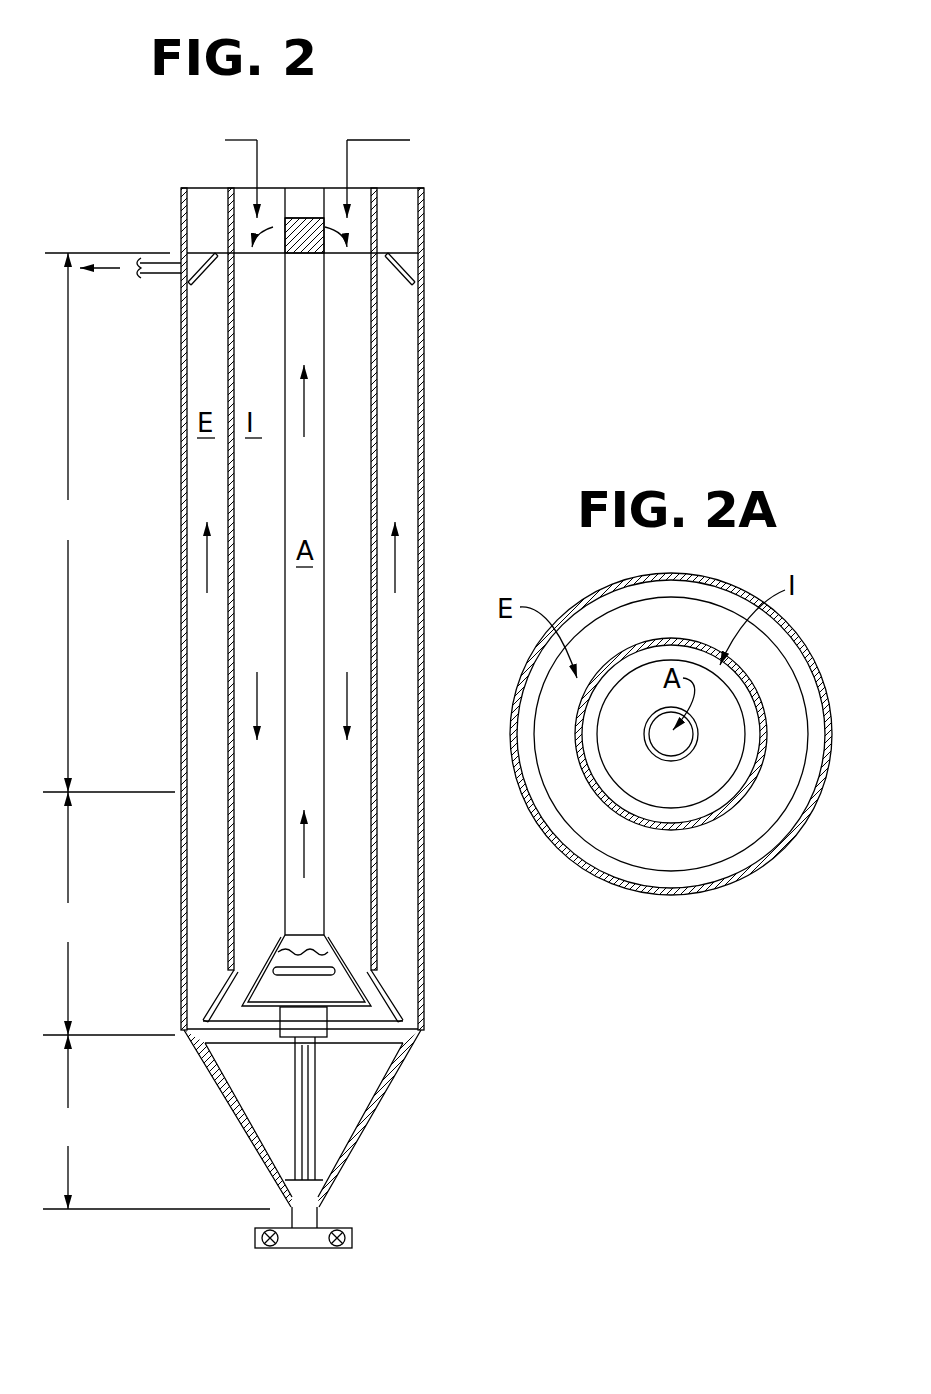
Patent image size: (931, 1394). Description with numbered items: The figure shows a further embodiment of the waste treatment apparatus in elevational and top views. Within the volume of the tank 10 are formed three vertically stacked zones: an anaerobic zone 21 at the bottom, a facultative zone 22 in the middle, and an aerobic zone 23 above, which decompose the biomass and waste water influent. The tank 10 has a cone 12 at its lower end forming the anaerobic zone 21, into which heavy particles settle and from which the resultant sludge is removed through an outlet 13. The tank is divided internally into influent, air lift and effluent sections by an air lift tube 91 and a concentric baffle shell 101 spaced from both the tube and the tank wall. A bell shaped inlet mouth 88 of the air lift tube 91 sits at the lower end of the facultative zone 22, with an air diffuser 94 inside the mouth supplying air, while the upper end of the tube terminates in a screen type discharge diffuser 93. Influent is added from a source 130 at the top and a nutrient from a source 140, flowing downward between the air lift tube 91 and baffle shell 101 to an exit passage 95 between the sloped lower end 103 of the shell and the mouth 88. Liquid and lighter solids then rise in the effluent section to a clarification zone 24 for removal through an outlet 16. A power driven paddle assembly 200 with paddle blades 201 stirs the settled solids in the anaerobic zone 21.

In FIG. 2, the tank 10 is at (426, 327).
In FIG. 2A, the tank 10 is at (660, 900).
In FIG. 2, the cone 12 is at (360, 1153).
In FIG. 2A, the cone 12 is at (752, 858).
In FIG. 2, the outlet 13 is at (318, 1243).
In FIG. 2, the outlet 16 is at (160, 274).
In FIG. 2, the anaerobic zone 21 is at (156, 1122).
In FIG. 2, the facultative zone 22 is at (109, 913).
In FIG. 2, the aerobic zone 23 is at (107, 522).
In FIG. 2, the clarification zone 24 is at (410, 262).
In FIG. 2, the inlet mouth 88 is at (342, 990).
In FIG. 2A, the inlet mouth 88 is at (706, 786).
In FIG. 2, the air lift tube 91 is at (313, 792).
In FIG. 2A, the air lift tube 91 is at (668, 760).
In FIG. 2, the screen type discharge diffuser 93 is at (323, 240).
In FIG. 2, the air diffuser 94 is at (317, 968).
In FIG. 2, the exit passage 95 is at (237, 992).
In FIG. 2A, the exit passage 95 is at (753, 762).
In FIG. 2, the baffle shell 101 is at (377, 456).
In FIG. 2A, the baffle shell 101 is at (755, 690).
In FIG. 2, the sloped lower end 103 is at (205, 1013).
In FIG. 2A, the sloped lower end 103 is at (760, 818).
In FIG. 2, the source 130 is at (255, 168).
In FIG. 2, the source 140 is at (403, 140).
In FIG. 2, the paddle assembly 200 is at (320, 1032).
In FIG. 2, the paddle blades 201 is at (327, 1128).